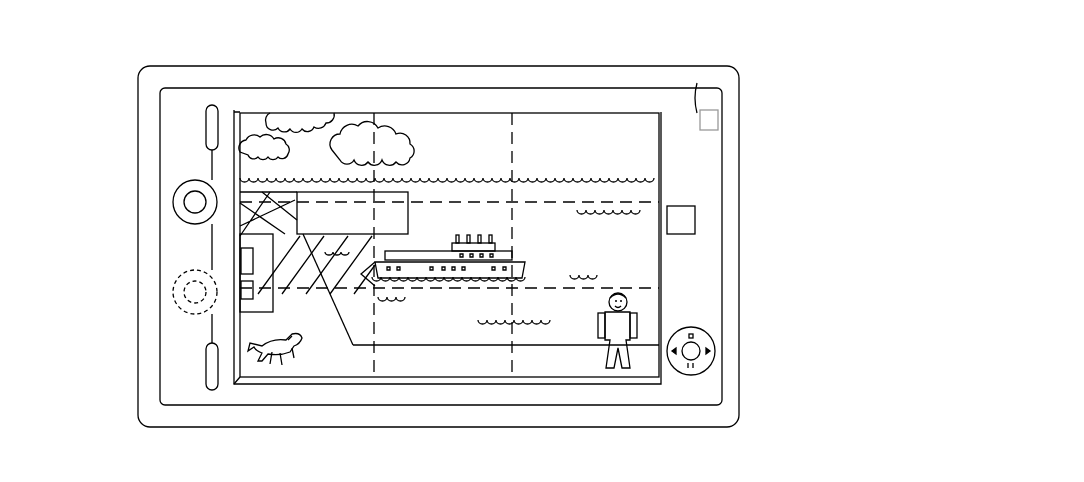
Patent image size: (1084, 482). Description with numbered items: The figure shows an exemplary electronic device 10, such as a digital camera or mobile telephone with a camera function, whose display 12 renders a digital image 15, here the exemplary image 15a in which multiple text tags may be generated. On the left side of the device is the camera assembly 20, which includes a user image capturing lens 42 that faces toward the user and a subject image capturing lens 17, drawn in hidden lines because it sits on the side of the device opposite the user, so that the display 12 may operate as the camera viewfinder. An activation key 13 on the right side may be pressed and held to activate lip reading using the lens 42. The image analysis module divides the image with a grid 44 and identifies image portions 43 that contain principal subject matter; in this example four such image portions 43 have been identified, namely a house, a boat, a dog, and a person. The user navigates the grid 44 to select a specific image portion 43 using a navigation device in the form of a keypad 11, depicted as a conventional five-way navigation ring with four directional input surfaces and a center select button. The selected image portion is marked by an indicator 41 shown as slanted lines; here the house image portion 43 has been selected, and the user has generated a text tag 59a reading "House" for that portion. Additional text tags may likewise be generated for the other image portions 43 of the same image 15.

The electronic device 10 is at (138, 135).
The camera assembly 20 is at (93, 165).
The user image capturing lens 42 is at (173, 202).
The subject image capturing lens 17 is at (173, 292).
The grid 44 is at (512, 141).
The digital image 15 is at (659, 148).
The image 15a is at (638, 152).
The activation key 13 is at (695, 217).
The display 12 is at (659, 272).
The keypad 11 is at (693, 340).
The text tag 59a is at (408, 192).
The indicator 41 is at (300, 283).
The image portions 43 is at (293, 280).